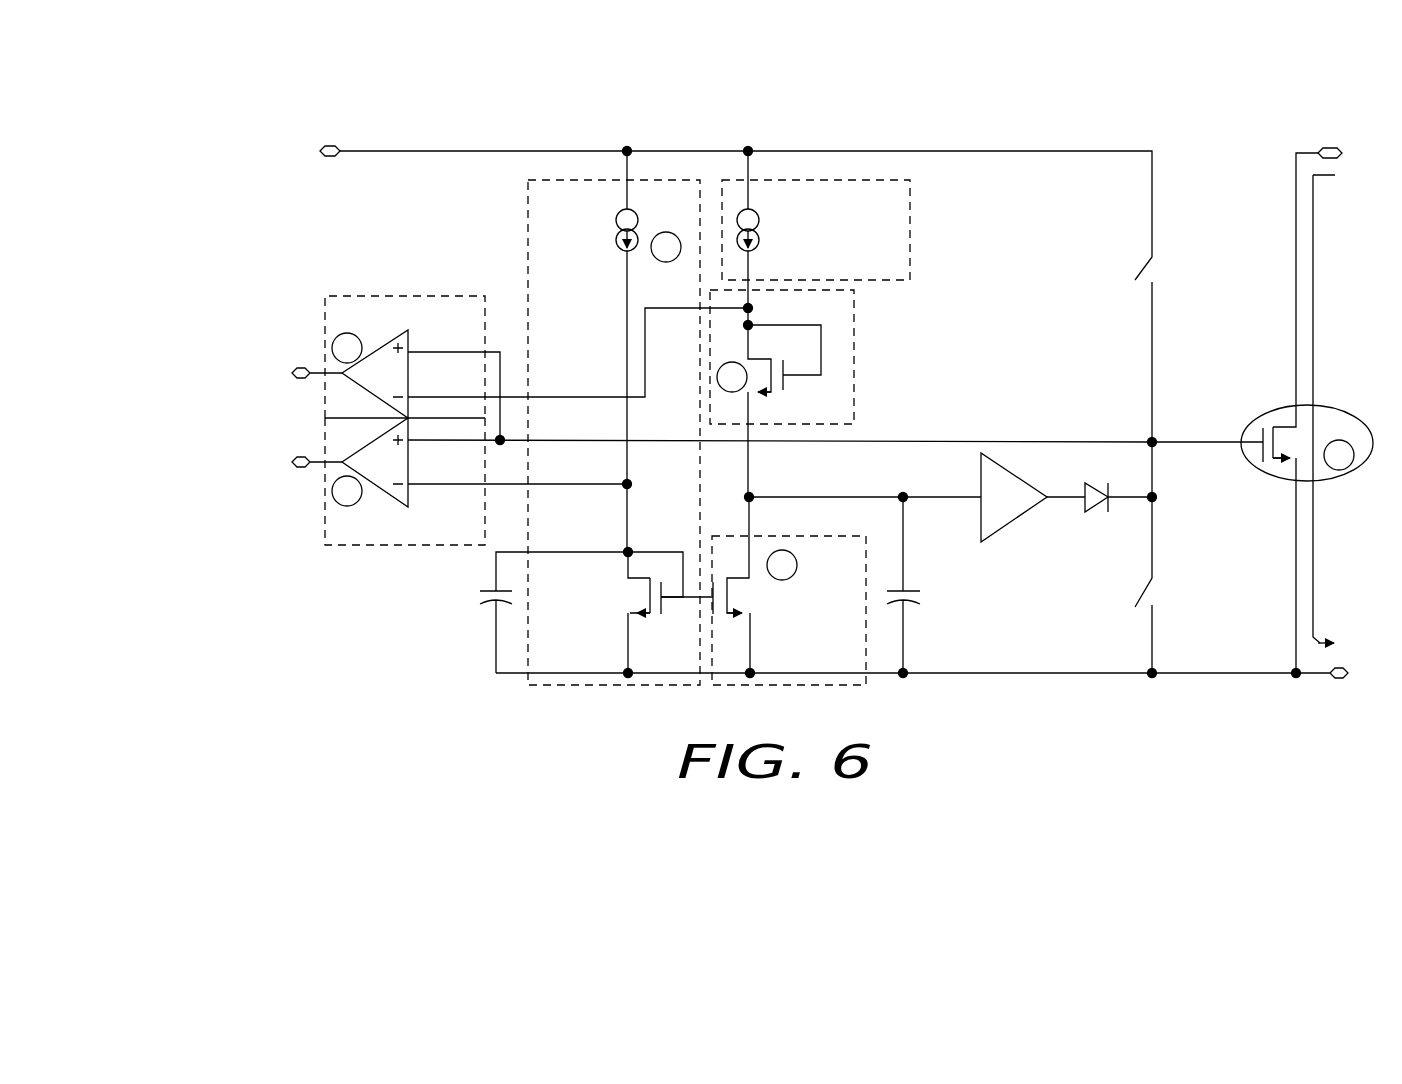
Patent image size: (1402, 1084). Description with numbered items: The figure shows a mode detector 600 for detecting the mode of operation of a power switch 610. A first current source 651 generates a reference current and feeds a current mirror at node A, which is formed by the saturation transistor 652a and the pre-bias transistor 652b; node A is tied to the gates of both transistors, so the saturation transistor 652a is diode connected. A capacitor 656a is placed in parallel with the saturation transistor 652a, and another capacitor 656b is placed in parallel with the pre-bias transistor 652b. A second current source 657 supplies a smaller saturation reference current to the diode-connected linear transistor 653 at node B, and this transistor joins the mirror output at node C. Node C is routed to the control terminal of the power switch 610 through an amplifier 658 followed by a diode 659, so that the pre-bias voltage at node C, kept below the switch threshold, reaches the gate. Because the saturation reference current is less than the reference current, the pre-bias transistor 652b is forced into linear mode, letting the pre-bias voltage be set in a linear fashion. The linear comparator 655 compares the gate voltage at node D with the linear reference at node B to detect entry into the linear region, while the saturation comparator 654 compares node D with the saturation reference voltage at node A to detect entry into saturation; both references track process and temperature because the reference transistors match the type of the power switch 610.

The mode detector 600 is at (195, 126).
The power switch 610 is at (1272, 484).
The first current source 651 is at (613, 228).
The saturation transistor Msat_ref 652a is at (647, 617).
The pre-bias transistor Mpre_bias_ref 652b is at (760, 613).
The linear transistor Mlin 653 is at (854, 345).
The saturation comparator 654 is at (425, 547).
The linear comparator 655 is at (408, 296).
The capacitor 656a is at (478, 596).
The capacitor 656b is at (927, 597).
The second current source 657 is at (910, 218).
The amplifier 658 is at (1020, 522).
The diode 659 is at (1100, 513).